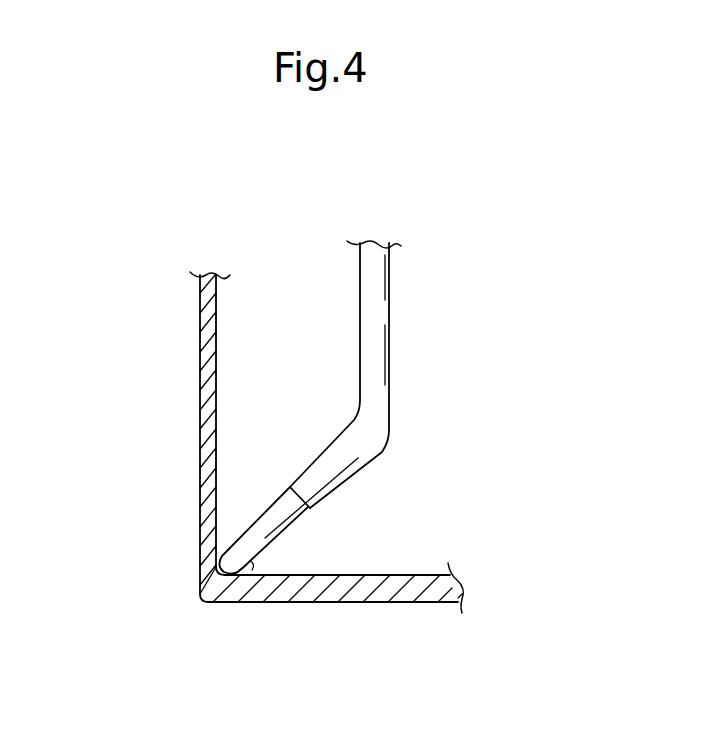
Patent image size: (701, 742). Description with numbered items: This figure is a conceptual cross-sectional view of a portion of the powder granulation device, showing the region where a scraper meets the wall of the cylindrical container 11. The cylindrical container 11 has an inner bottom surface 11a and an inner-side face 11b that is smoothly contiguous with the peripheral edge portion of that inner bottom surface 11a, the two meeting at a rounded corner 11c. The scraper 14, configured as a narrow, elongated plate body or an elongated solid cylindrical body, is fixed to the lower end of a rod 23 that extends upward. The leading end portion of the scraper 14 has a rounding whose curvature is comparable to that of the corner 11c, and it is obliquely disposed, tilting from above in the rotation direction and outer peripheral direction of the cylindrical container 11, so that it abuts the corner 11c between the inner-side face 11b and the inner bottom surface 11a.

The cylindrical container 11 is at (262, 474).
The inner bottom surface 11a is at (373, 577).
The inner-side face 11b is at (195, 382).
The corner 11c is at (202, 595).
The scraper 14 is at (272, 520).
The rod 23 is at (378, 358).